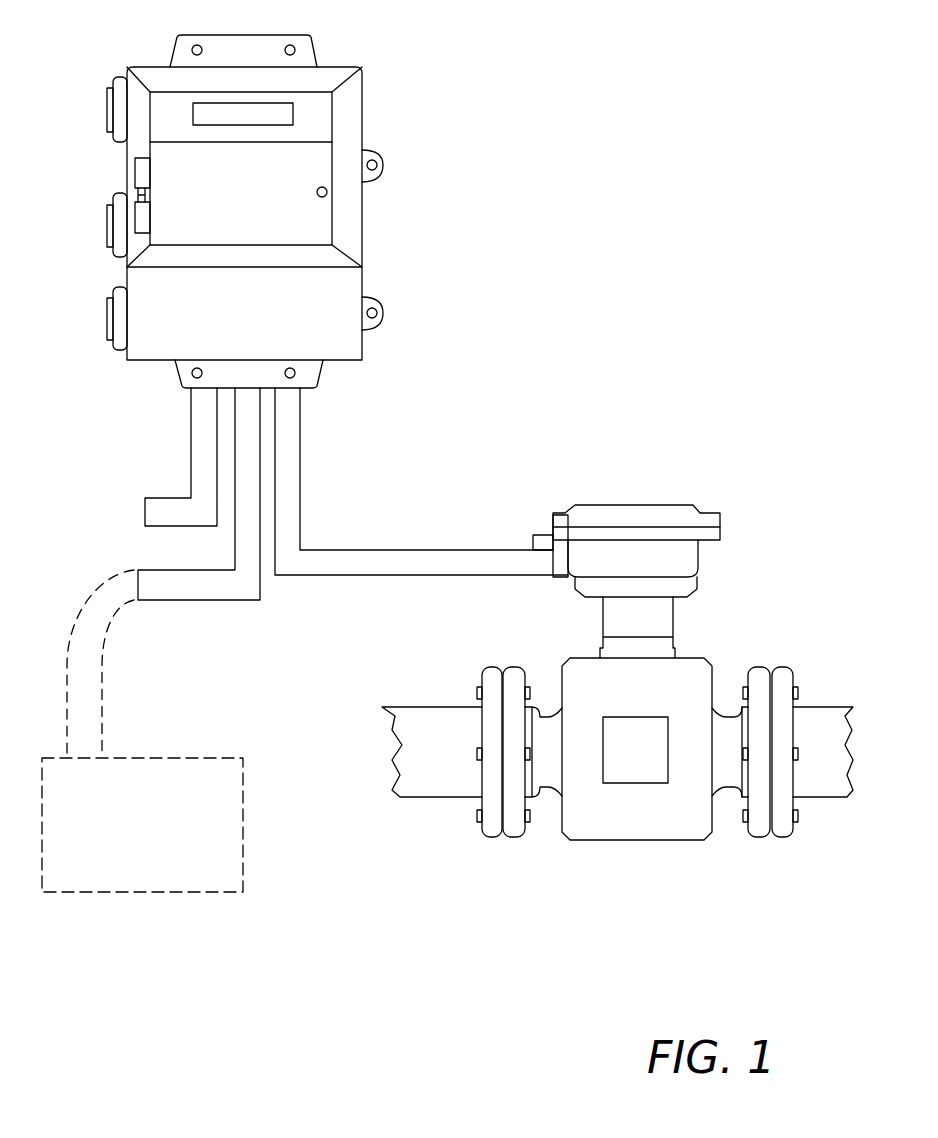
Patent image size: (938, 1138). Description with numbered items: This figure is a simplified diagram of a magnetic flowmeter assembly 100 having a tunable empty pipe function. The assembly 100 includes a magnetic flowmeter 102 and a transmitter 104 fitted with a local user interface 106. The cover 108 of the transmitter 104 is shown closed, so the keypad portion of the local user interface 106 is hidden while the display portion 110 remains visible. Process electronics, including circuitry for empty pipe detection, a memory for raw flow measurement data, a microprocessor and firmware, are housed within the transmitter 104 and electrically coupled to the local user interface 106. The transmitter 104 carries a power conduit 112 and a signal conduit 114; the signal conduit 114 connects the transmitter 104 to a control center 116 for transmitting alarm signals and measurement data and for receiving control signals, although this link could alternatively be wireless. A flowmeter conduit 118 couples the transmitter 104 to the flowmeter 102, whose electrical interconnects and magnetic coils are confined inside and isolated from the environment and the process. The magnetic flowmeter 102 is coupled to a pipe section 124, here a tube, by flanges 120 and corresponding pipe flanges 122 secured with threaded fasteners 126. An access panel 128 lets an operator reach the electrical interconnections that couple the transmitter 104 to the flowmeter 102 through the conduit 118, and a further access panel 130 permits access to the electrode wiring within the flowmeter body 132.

The magnetic flowmeter assembly 100 is at (590, 162).
The magnetic flowmeter 102 is at (745, 456).
The transmitter 104 is at (412, 135).
The local user interface 106 is at (322, 103).
The cover 108 is at (340, 196).
The display portion 110 is at (196, 108).
The power conduit 112 is at (198, 410).
The signal conduit 114 is at (203, 583).
The control center 116 is at (217, 758).
The flowmeter conduit 118 is at (348, 548).
The flanges 120 is at (508, 665).
The pipe flanges 122 is at (483, 665).
The pipe section 124 is at (383, 706).
The threaded fasteners 126 is at (480, 821).
The access panel 128 is at (630, 505).
The access panel 130 is at (637, 748).
The flowmeter body 132 is at (683, 670).